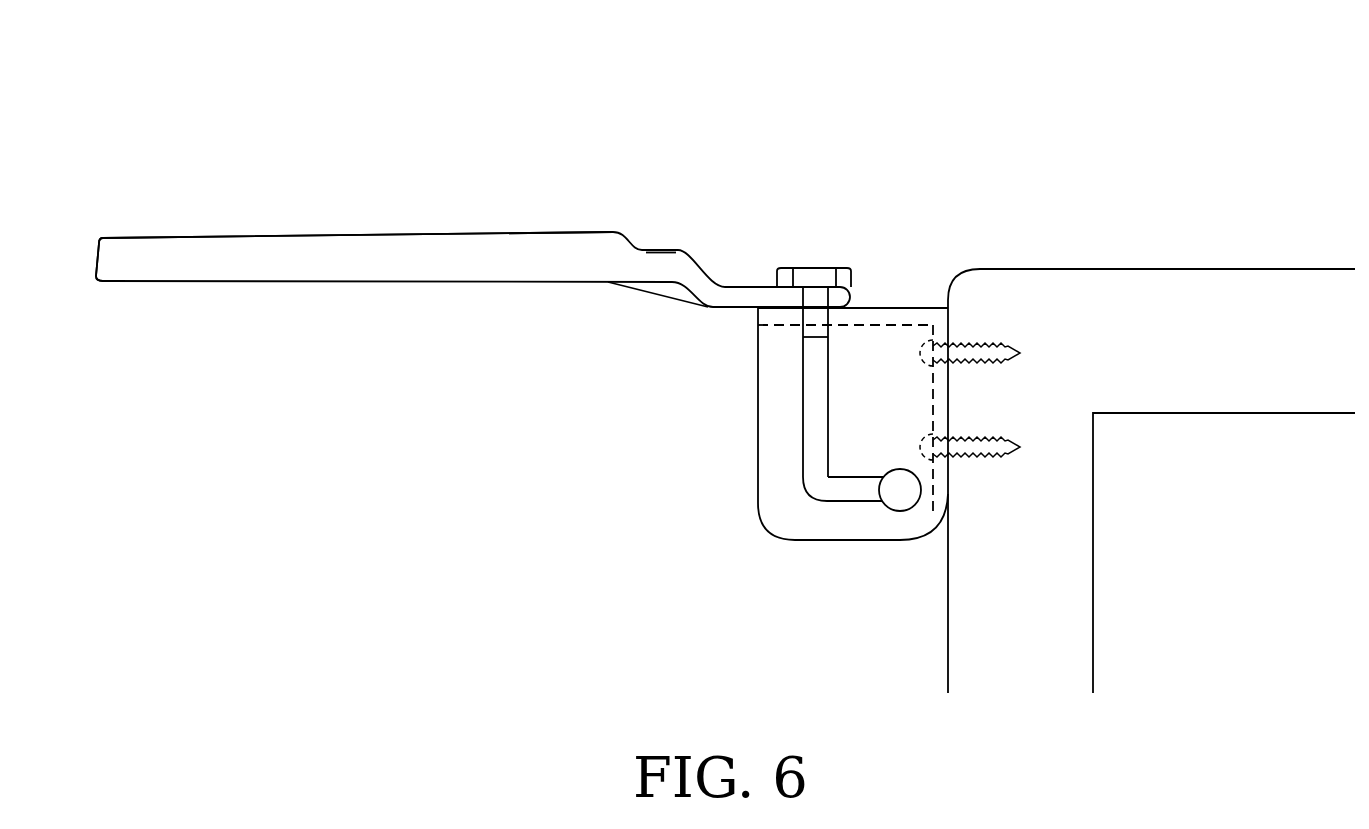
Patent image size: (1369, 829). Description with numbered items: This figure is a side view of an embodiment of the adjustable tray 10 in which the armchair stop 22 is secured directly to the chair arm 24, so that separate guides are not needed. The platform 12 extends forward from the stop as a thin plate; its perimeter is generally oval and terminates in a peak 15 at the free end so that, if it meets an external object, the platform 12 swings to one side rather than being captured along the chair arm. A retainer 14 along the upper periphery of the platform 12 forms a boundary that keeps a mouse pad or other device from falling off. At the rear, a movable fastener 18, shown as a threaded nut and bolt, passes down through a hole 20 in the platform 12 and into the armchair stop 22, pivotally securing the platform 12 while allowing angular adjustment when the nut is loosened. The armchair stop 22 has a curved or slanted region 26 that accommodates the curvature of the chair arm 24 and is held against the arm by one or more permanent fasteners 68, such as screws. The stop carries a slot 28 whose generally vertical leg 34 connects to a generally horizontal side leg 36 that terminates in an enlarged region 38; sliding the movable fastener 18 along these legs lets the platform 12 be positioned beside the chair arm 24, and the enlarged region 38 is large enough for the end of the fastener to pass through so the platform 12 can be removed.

The adjustable tray 10 is at (832, 90).
The platform 12 is at (390, 282).
The retainer 14 is at (292, 250).
The peak 15 is at (95, 275).
The movable fastener 18 is at (817, 268).
The hole 20 is at (812, 298).
The armchair stop 22 is at (893, 317).
The chair arm 24 is at (1177, 285).
The curved or slanted region 26 is at (937, 510).
The slot 28 is at (802, 477).
The vertical leg 34 is at (812, 425).
The horizontal side leg 36 is at (850, 490).
The enlarged region 38 is at (898, 495).
The permanent fastener 68 is at (973, 438).